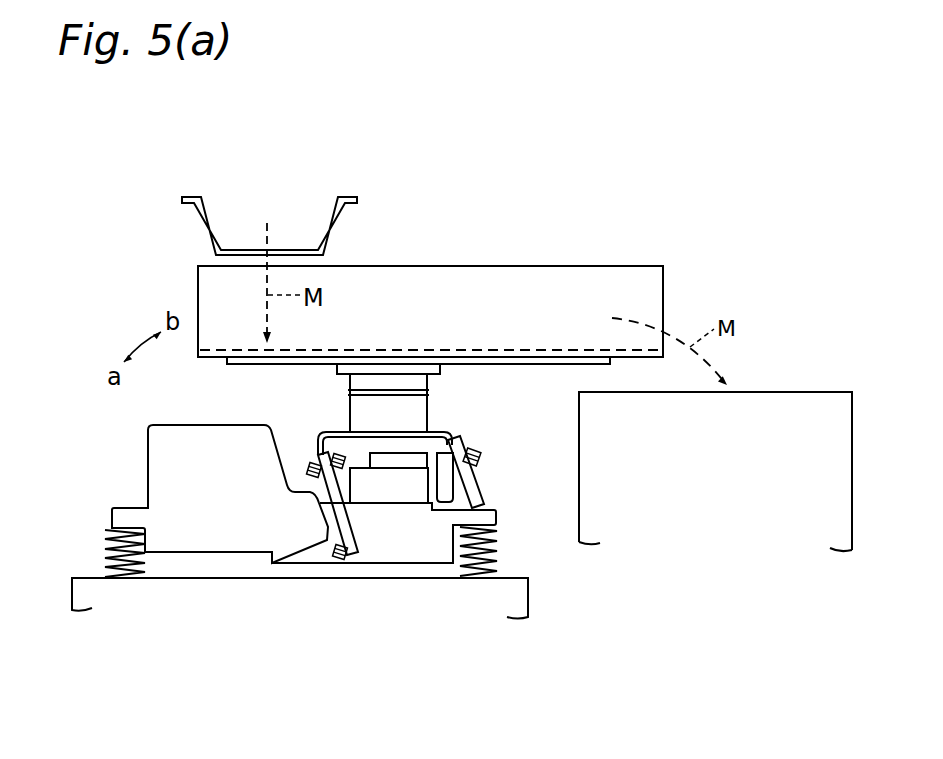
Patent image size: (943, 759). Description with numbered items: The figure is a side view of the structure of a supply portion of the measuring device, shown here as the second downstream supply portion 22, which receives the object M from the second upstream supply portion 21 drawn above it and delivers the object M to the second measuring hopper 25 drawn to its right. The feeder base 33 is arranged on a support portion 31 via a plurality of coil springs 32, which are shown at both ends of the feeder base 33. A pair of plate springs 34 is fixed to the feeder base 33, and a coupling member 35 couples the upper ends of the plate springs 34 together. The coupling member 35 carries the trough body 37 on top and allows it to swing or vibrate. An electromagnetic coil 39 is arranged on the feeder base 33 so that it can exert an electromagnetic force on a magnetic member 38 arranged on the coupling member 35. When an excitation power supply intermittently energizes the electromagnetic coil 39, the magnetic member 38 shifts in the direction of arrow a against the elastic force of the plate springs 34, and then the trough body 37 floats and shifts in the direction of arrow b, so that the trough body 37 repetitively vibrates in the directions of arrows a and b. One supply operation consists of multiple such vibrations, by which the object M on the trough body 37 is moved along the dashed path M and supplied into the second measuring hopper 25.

The second upstream supply portion 21 is at (210, 224).
The second downstream supply portion 22 is at (548, 217).
The second measuring hopper 25 is at (783, 396).
The support portion 31 is at (92, 576).
The coil springs 32 is at (107, 544).
The feeder base 33 is at (403, 565).
The plate springs 34 is at (329, 527).
The coupling member 35 is at (442, 433).
The trough body 37 is at (469, 272).
The magnetic member 38 is at (445, 504).
The electromagnetic coil 39 is at (402, 486).